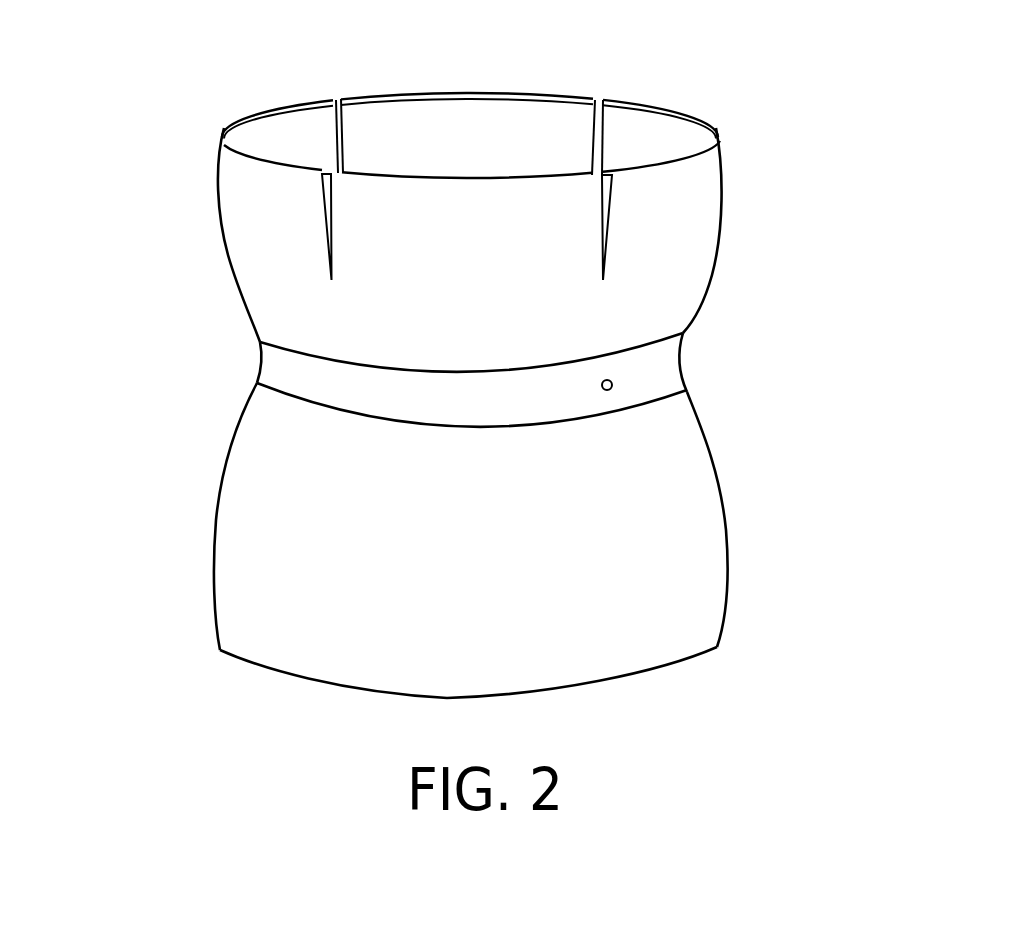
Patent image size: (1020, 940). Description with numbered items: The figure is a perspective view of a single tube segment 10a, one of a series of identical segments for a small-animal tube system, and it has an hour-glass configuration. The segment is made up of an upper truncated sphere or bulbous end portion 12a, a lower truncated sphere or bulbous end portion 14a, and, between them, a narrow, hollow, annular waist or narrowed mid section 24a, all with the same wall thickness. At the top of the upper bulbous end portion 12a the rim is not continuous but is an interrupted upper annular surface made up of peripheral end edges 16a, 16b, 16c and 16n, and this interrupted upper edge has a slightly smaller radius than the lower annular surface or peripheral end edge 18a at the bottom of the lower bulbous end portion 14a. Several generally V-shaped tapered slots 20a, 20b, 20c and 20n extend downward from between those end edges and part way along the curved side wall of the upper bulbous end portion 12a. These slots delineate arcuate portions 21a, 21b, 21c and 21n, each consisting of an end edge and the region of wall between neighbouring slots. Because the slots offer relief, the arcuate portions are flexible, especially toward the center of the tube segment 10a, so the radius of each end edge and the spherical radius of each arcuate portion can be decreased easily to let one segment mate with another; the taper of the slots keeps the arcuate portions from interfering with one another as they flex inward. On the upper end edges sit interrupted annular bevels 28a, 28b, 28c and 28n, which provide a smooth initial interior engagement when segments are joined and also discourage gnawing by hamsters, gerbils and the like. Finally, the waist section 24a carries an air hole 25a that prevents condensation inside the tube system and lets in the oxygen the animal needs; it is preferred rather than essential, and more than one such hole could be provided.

The tube segment 10a is at (748, 89).
The upper truncated sphere or bulbous end portion 12a is at (516, 235).
The lower truncated sphere or bulbous end portion 14a is at (401, 516).
The interrupted upper annular surface or peripheral end edge 16a is at (514, 154).
The interrupted upper annular surface or peripheral end edge 16b is at (713, 118).
The interrupted upper annular surface or peripheral end edge 16c is at (467, 77).
The interrupted upper annular surface or peripheral end edge 16n is at (234, 99).
The lower annular surface or peripheral end edge 18a is at (458, 680).
The tapered slot 20a is at (228, 227).
The tapered slot 20b is at (731, 215).
The tapered slot 20c is at (653, 107).
The tapered slot 20n is at (273, 94).
The arcuate portion 21a is at (467, 242).
The arcuate portion 21b is at (722, 184).
The arcuate portion 21c is at (399, 96).
The arcuate portion 21n is at (206, 191).
The annular intersection or narrowed mid section 24a is at (520, 380).
The air hole 25a is at (698, 411).
The interrupted annular bevel 28a is at (357, 165).
The interrupted annular bevel 28b is at (659, 106).
The interrupted annular bevel 28c is at (467, 62).
The interrupted annular bevel 28n is at (234, 117).